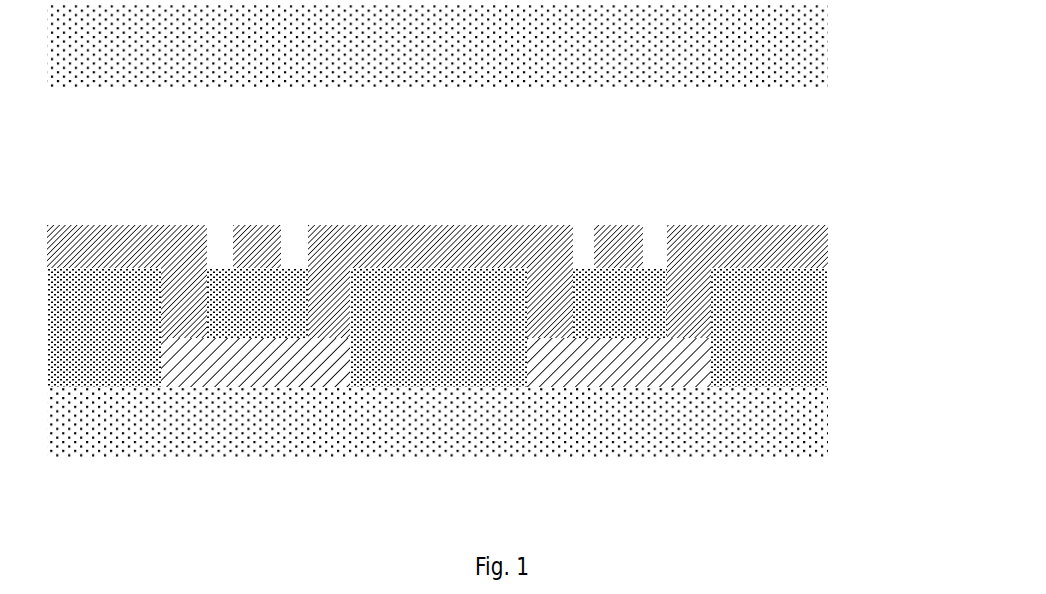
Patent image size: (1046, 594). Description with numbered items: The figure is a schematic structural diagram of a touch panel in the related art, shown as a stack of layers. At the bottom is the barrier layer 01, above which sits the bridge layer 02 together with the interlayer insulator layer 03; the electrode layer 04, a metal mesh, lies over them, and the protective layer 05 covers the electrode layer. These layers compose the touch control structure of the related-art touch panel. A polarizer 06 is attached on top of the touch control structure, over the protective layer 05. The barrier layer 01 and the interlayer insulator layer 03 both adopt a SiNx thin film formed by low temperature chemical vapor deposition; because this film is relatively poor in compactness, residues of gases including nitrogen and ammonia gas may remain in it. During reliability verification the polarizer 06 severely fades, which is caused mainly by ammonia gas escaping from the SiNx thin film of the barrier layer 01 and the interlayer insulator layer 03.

The barrier layer 01 is at (780, 421).
The bridge layer 02 is at (436, 436).
The interlayer insulator layer 03 is at (780, 332).
The electrode layer 04 is at (828, 248).
The protective layer 05 is at (780, 155).
The polarizer 06 is at (783, 48).